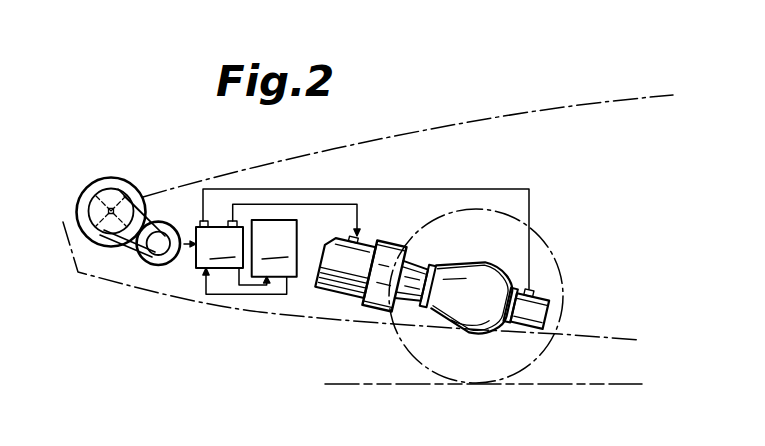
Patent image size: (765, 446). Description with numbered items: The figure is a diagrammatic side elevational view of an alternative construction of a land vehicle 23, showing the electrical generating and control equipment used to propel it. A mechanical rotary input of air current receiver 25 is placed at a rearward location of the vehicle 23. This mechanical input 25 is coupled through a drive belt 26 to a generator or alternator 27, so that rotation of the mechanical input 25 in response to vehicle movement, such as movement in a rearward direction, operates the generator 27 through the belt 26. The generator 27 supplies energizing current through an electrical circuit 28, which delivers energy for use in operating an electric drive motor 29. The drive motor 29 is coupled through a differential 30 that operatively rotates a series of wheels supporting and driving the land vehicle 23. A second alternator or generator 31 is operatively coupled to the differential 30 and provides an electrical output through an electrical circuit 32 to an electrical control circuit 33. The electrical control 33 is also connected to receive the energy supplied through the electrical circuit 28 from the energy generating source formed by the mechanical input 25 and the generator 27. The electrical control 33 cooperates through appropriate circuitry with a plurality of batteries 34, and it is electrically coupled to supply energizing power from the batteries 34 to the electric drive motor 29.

The vehicle 23 is at (397, 147).
The mechanical rotary input of air current receiver 25 is at (110, 176).
The drive belt 26 is at (148, 197).
The generator or alternator 27 is at (157, 267).
The electrical circuit 28 is at (184, 244).
The electric drive motor 29 is at (360, 270).
The differential 30 is at (456, 292).
The alternator or generator 31 is at (535, 310).
The electrical circuit 32 is at (490, 188).
The electrical control circuit 33 is at (241, 257).
The batteries 34 is at (274, 248).